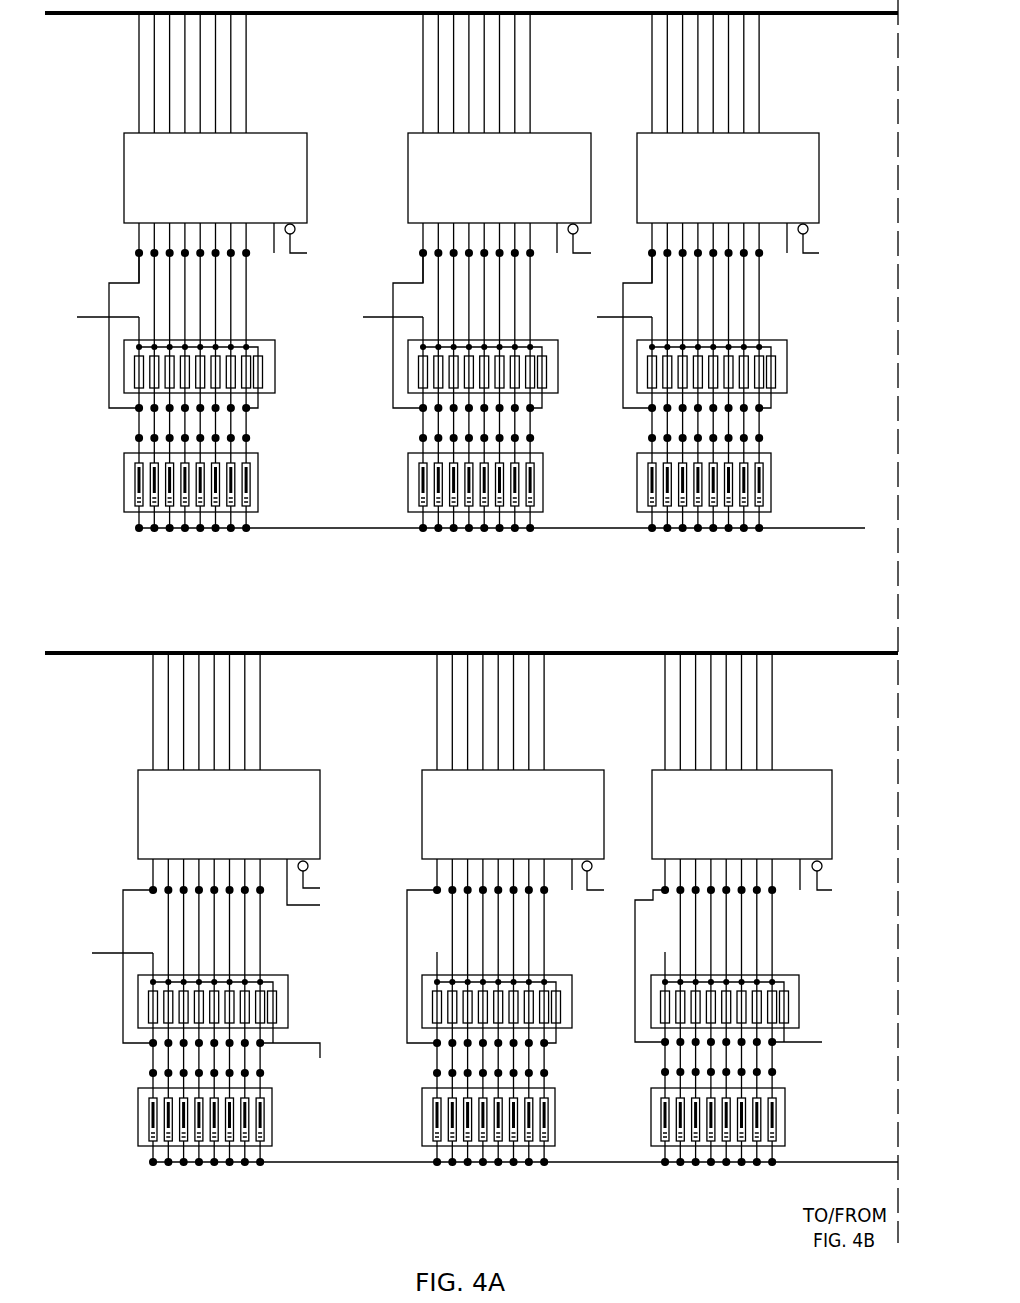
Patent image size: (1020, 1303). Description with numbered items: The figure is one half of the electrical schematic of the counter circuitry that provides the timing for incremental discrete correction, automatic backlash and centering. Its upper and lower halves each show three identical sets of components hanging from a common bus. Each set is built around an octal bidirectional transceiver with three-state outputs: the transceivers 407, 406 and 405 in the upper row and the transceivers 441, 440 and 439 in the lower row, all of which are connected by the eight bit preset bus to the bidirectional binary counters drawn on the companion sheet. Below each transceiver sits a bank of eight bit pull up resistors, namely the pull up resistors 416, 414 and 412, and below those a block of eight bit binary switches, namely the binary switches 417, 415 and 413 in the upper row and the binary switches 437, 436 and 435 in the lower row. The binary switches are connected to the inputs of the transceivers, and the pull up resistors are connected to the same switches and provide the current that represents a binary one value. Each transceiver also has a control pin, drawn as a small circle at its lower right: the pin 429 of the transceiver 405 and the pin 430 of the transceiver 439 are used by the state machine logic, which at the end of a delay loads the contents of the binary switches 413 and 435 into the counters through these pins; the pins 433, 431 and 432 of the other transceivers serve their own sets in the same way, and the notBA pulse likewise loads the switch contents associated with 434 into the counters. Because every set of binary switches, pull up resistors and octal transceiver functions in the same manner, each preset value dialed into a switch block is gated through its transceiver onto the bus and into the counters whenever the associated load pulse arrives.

The octal bidirectional transceiver 405 is at (637, 141).
The octal bidirectional transceiver 406 is at (408, 141).
The octal bidirectional transceiver 407 is at (124, 141).
The pull up resistors 412 is at (787, 350).
The binary switches 413 is at (771, 470).
The pull up resistors 414 is at (558, 377).
The binary switches 415 is at (543, 490).
The pull up resistors 416 is at (275, 353).
The binary switches 417 is at (258, 471).
The pin of octal bidirectional transceiver 429 is at (819, 253).
The pin of octal bidirectional transceiver 430 is at (832, 890).
The enable input 431 is at (591, 253).
The enable input 432 is at (604, 890).
The enable input 433 is at (307, 253).
The binary switches 434 is at (312, 905).
The binary switches 435 is at (785, 1115).
The switch array 436 is at (555, 1115).
The switch array 437 is at (272, 1115).
The octal bidirectional transceiver 439 is at (652, 780).
The latch circuit 440 is at (422, 780).
The latch circuit 441 is at (138, 780).